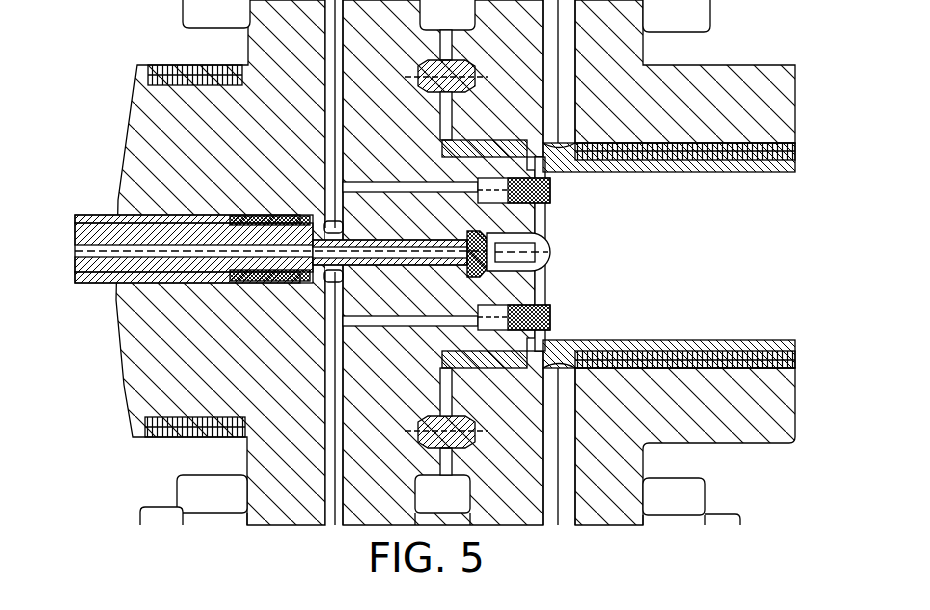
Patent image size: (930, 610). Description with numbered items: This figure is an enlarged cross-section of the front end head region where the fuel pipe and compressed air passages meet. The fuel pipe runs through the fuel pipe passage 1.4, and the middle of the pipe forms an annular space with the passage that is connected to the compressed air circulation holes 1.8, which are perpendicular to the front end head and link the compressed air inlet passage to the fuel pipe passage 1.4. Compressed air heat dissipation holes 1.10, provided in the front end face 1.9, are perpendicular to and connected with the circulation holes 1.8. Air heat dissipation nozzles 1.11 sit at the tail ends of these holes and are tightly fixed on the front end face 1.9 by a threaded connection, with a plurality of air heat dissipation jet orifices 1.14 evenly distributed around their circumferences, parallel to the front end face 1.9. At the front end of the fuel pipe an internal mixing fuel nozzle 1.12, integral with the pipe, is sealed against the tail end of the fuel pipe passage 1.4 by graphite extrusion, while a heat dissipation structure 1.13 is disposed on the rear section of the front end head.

The fuel pipe passage 1.4 is at (230, 278).
The compressed air circulation holes 1.8 is at (335, 120).
The front end face 1.9 is at (543, 218).
The compressed air heat dissipation holes 1.10 is at (467, 197).
The air heat dissipation nozzles 1.11 is at (548, 318).
The internal mixing fuel nozzle 1.12 is at (548, 250).
The heat dissipation structure 1.13 is at (190, 63).
The air heat dissipation jet orifices 1.14 is at (545, 302).